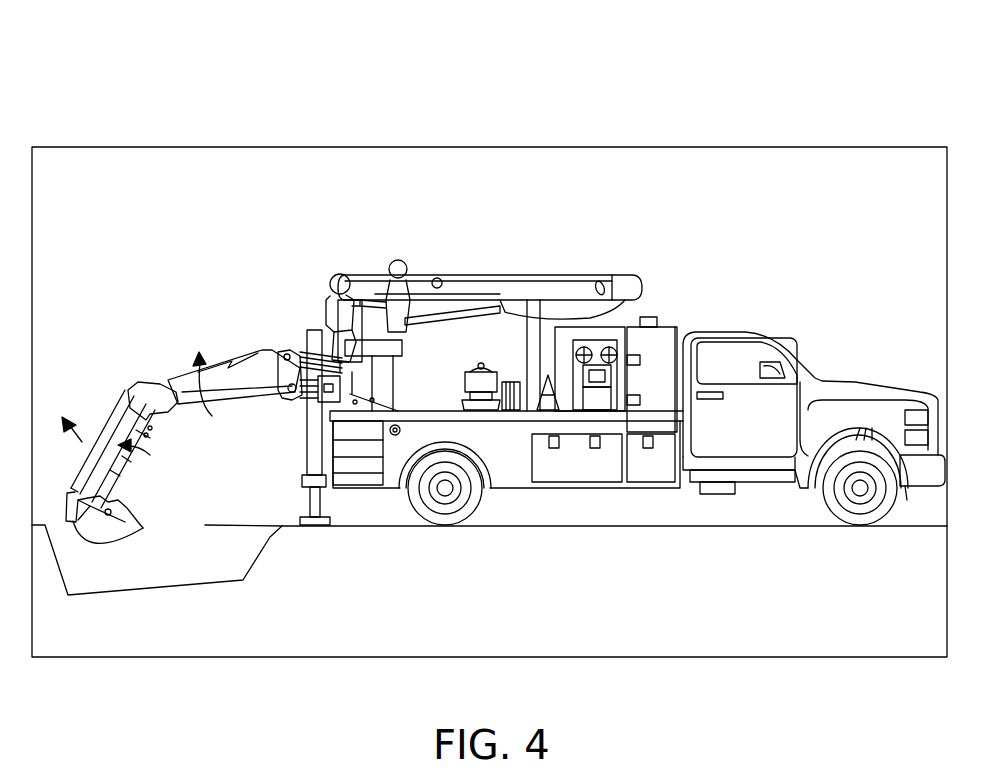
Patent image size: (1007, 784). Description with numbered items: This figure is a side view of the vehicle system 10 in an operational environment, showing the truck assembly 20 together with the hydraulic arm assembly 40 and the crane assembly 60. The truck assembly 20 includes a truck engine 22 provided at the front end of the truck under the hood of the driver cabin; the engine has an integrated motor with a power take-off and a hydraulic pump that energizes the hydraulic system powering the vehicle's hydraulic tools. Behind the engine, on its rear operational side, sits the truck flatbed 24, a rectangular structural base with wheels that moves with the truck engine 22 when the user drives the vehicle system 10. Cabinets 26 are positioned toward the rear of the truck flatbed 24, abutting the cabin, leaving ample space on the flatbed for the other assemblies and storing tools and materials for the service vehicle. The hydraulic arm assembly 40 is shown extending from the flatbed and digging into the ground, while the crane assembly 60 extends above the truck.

The vehicle system 10 is at (582, 112).
The truck assembly 20 is at (739, 318).
The truck engine 22 is at (862, 388).
The truck flatbed 24 is at (512, 463).
The cabinets 26 is at (668, 345).
The hydraulic arm assembly 40 is at (130, 382).
The crane assembly 60 is at (521, 280).